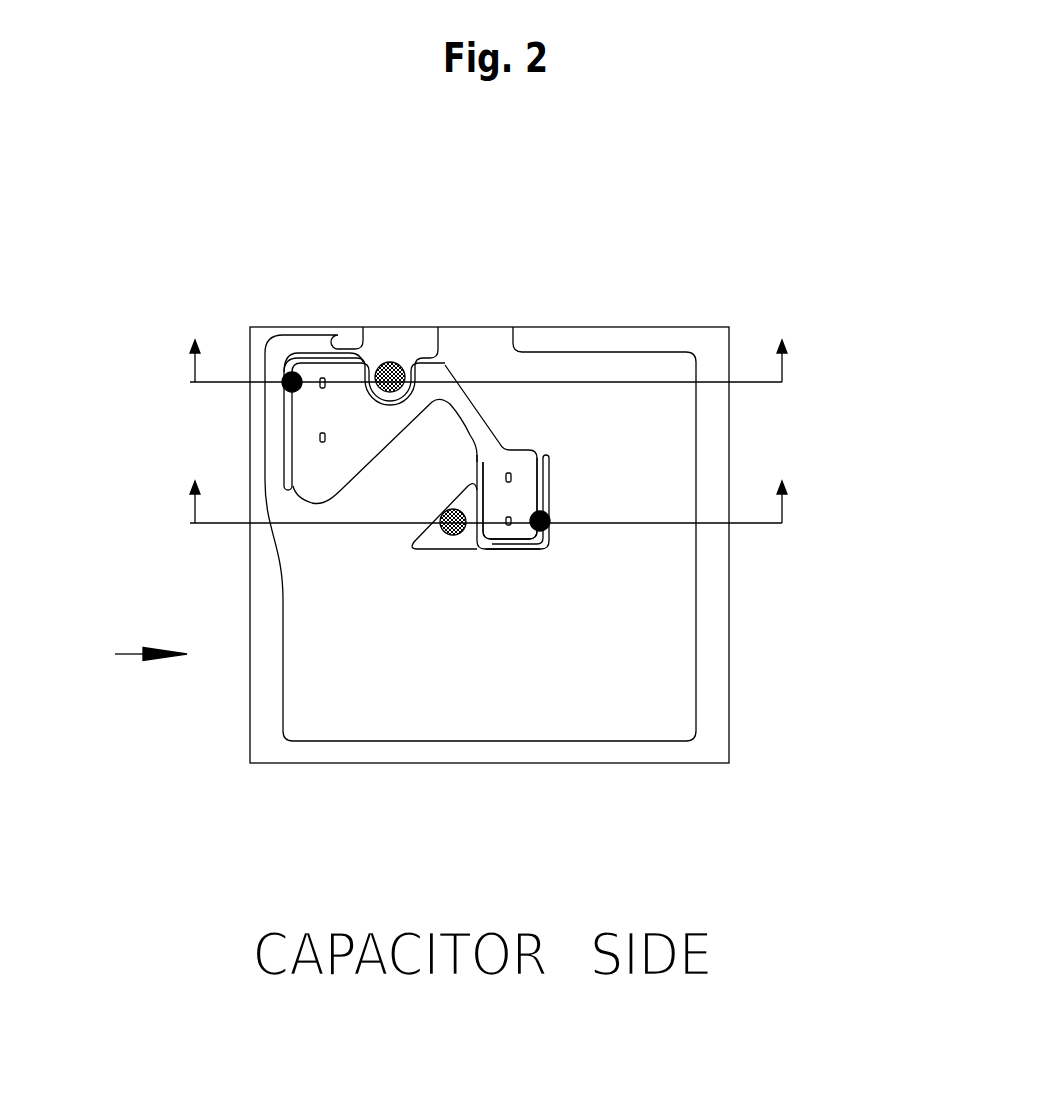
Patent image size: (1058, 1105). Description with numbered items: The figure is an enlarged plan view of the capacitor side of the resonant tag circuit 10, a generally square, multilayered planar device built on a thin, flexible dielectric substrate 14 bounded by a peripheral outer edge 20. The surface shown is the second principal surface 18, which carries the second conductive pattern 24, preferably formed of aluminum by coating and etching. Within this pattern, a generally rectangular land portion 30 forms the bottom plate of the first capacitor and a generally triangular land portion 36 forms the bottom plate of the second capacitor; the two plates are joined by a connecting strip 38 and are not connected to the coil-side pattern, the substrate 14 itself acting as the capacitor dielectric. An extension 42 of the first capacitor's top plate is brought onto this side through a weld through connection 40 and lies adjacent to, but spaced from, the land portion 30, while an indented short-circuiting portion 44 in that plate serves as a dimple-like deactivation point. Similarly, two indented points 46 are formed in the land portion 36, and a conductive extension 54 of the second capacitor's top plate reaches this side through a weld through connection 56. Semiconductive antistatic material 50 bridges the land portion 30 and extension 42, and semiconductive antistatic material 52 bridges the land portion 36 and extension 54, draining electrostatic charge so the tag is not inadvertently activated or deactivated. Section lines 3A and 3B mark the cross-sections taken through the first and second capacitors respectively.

The resonant tag circuit 10 is at (121, 652).
The dielectric substrate 14 is at (658, 657).
The second principal surface 18 is at (608, 722).
The peripheral outer edge 20 is at (729, 694).
The second conductive pattern 24 is at (448, 372).
The land portion 30 is at (518, 502).
The land portion 36 is at (312, 460).
The connecting strip 38 is at (468, 417).
The weld through connection 40 is at (440, 535).
The extension 42 is at (512, 549).
The indented short-circuiting portion 44 is at (530, 480).
The indented points 46 is at (322, 377).
The semiconductive antistatic material 50 is at (548, 528).
The semiconductive antistatic material 52 is at (284, 373).
The conductive extension 54 is at (380, 343).
The weld through connection 56 is at (393, 362).
The section line 3A is at (491, 506).
The section line 3B is at (491, 364).